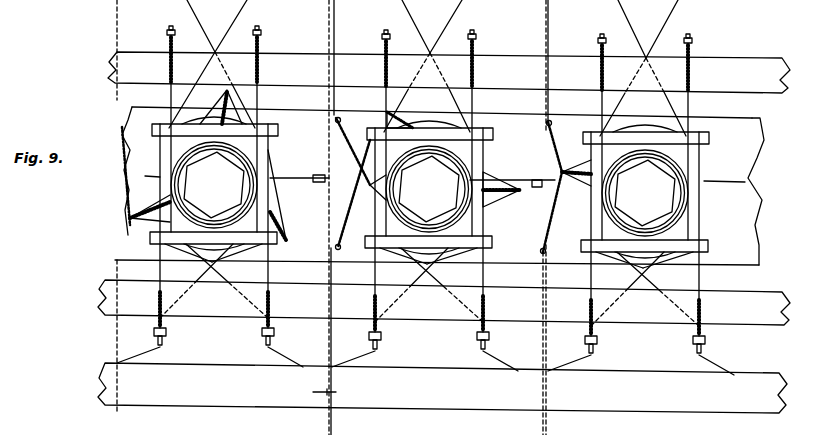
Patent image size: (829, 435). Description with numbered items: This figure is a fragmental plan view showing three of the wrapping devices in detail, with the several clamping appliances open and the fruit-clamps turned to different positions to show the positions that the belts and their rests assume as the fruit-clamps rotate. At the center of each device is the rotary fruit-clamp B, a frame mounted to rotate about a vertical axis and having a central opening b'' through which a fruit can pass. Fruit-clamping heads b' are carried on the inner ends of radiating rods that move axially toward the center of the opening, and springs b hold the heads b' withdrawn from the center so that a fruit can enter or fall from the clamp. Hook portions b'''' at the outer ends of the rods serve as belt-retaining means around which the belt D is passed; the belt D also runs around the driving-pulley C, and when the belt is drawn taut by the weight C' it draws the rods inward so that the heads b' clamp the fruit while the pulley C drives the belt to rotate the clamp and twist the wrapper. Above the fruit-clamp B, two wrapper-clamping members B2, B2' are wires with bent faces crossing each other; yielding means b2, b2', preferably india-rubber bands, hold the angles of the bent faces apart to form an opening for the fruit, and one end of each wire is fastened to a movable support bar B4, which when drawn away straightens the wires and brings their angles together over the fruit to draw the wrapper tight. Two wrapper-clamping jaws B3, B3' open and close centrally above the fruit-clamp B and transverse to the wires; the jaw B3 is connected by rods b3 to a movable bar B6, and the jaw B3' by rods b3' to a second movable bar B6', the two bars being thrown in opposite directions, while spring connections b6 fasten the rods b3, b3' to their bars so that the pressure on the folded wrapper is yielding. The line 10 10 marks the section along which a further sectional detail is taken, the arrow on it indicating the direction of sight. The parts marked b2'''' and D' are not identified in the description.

The fruit-clamp B is at (276, 157).
The wrapper-clamping member B2 is at (425, 187).
The wrapper-clamping member B2' is at (423, 183).
The wrapper-clamping jaw B3 is at (430, 122).
The wrapper-clamping jaw B3' is at (443, 252).
The movable wire-support bar B4 is at (442, 388).
The movable bar B6 is at (444, 302).
The movable bar B6' is at (449, 72).
The spring b is at (360, 204).
The fruit-clamping head b' is at (214, 185).
The central opening b'' is at (537, 191).
The hook portion b'''' is at (526, 158).
The yielding means b2 is at (449, 186).
The yielding means b2' is at (353, 182).
The clamp block b2'''' is at (291, 203).
The rod b3 is at (406, 161).
The rod b3' is at (429, 202).
The spring connection b6 is at (383, 46).
The driving-pulley C is at (450, 92).
The weight C' is at (450, 287).
The belt D is at (332, 178).
The gusset brace D' is at (357, 193).
The section line 10 is at (331, 217).